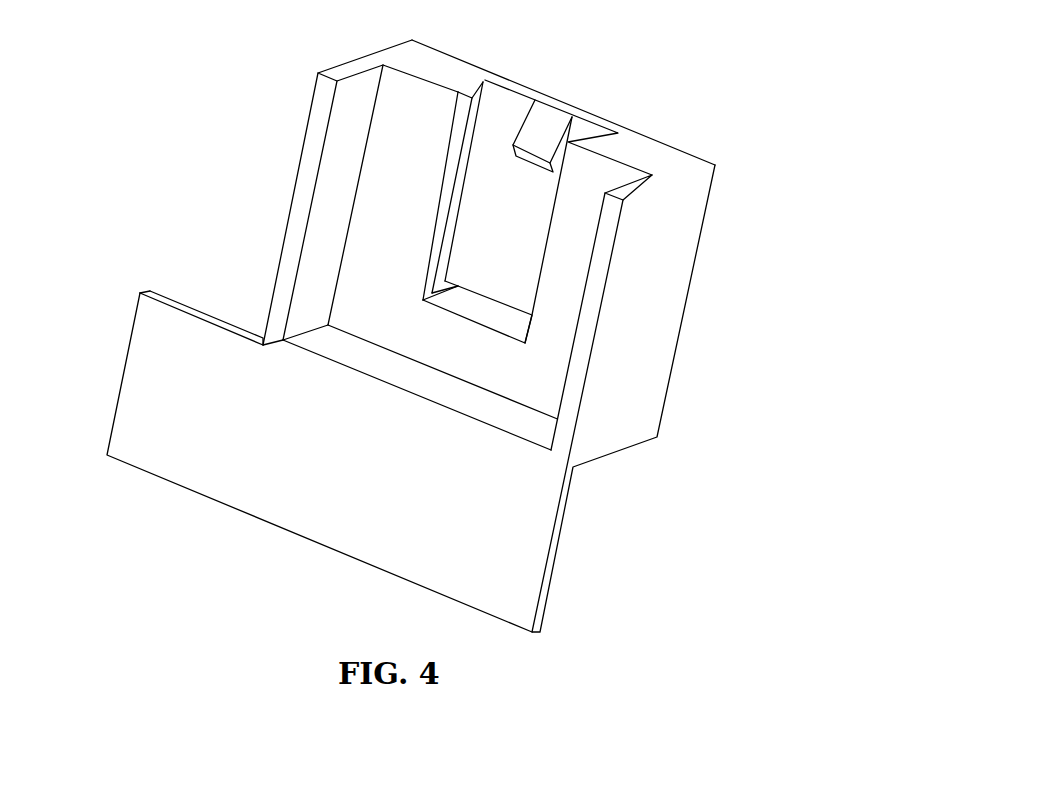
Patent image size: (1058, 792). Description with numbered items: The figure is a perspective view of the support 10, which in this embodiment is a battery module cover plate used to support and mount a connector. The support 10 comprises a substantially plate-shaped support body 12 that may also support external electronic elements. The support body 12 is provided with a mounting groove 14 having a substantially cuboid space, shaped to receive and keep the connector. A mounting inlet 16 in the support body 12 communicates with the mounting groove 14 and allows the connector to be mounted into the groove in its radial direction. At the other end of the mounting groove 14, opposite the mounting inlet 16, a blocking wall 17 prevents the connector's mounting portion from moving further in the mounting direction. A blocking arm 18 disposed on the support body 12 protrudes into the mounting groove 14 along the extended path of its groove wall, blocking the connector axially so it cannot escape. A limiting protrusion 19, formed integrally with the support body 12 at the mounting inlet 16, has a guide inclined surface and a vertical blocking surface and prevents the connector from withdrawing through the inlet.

The support 10 is at (530, 57).
The support body 12 is at (657, 315).
The mounting groove 14 is at (483, 251).
The mounting inlet 16 is at (512, 102).
The blocking wall 17 is at (485, 318).
The blocking arm 18 is at (455, 208).
The limiting protrusion 19 is at (543, 140).